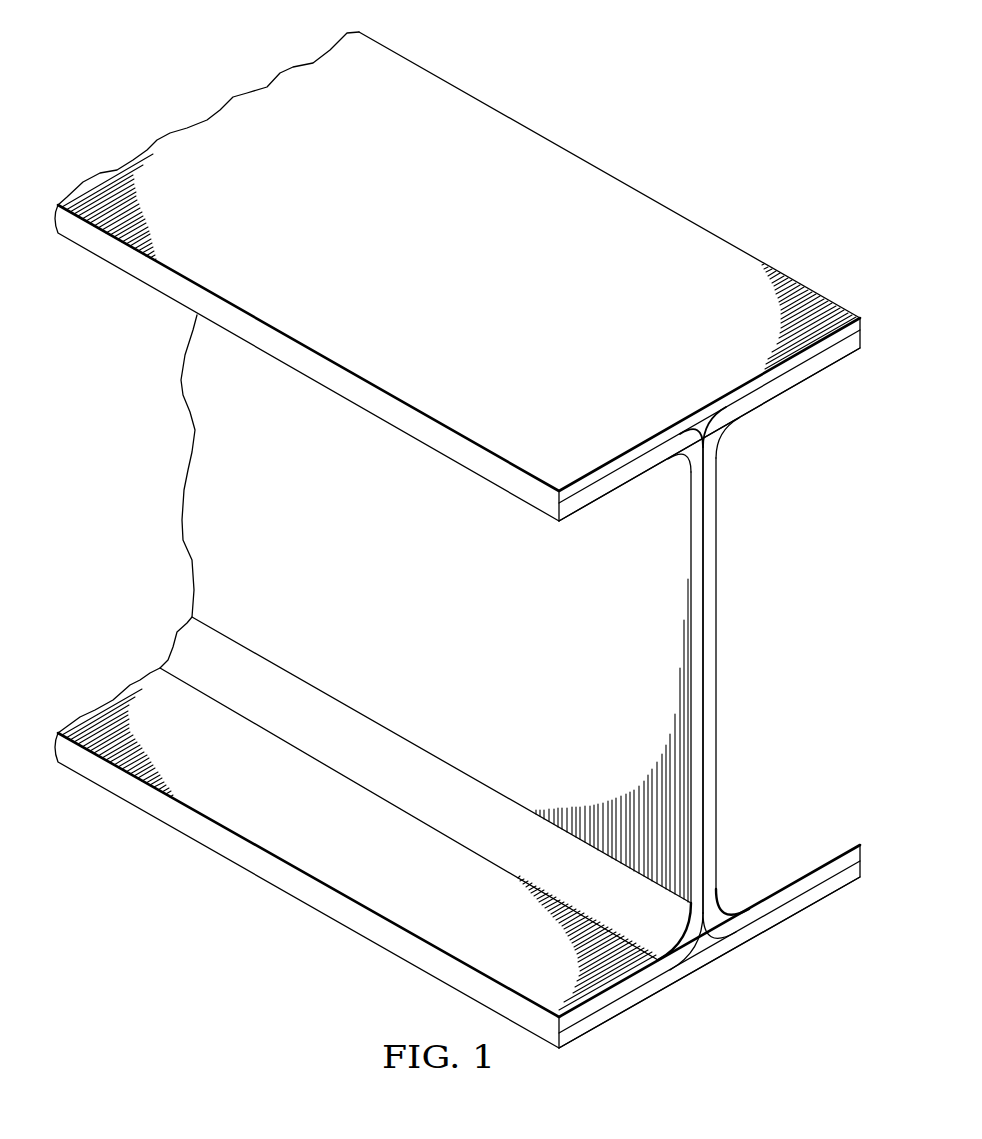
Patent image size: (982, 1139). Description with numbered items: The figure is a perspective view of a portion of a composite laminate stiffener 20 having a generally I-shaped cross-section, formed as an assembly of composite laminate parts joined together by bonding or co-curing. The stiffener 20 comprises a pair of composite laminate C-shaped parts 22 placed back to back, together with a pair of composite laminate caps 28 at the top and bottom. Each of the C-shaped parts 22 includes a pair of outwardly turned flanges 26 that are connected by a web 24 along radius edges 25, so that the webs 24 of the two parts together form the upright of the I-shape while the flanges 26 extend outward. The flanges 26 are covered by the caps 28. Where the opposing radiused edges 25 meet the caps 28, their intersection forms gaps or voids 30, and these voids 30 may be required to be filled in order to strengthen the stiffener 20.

The stiffener 20 is at (468, 546).
The C-shaped part 22 is at (468, 546).
The web 24 is at (727, 660).
The radius edge 25 is at (693, 440).
The flange 26 is at (813, 368).
The cap 28 is at (551, 157).
The gap or void 30 is at (708, 437).